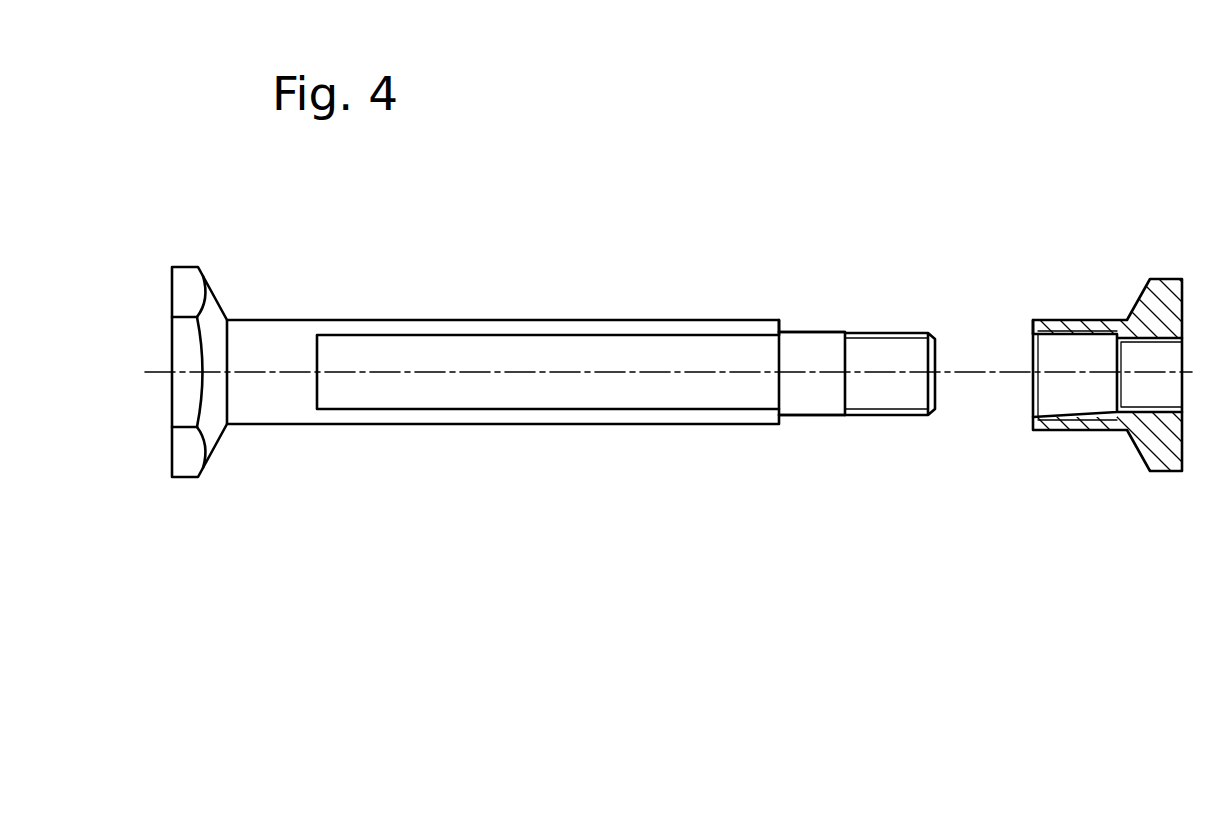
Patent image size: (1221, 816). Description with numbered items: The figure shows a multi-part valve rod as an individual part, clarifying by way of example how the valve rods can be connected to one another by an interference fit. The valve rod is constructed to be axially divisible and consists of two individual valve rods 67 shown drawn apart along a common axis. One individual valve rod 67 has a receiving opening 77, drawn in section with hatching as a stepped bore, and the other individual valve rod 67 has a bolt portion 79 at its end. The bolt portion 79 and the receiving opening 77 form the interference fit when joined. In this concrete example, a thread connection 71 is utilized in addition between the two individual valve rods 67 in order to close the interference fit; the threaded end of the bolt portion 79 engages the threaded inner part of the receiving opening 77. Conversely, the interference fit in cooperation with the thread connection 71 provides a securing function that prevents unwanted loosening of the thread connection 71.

The individual valve rod 67 is at (1048, 327).
The thread connection 71 is at (907, 417).
The receiving opening 77 is at (1065, 415).
The bolt portion 79 is at (810, 417).